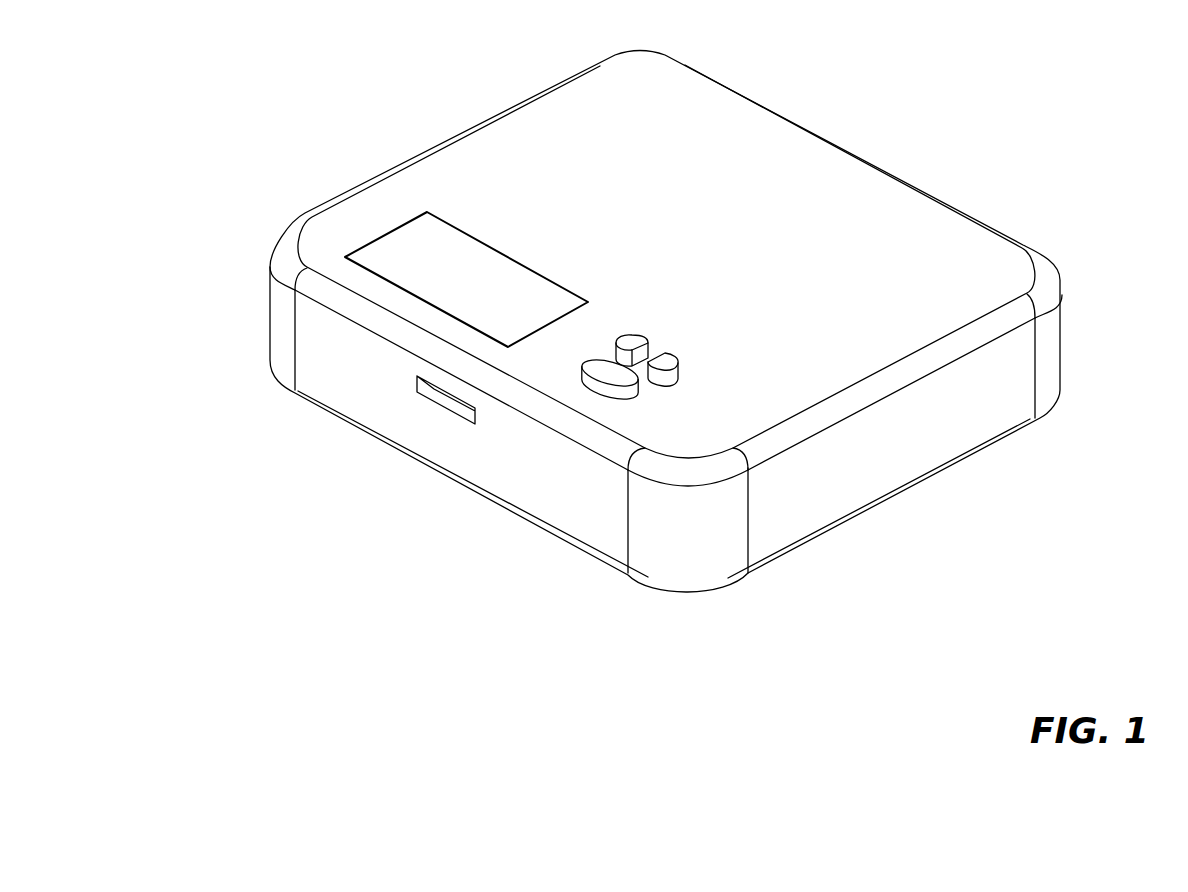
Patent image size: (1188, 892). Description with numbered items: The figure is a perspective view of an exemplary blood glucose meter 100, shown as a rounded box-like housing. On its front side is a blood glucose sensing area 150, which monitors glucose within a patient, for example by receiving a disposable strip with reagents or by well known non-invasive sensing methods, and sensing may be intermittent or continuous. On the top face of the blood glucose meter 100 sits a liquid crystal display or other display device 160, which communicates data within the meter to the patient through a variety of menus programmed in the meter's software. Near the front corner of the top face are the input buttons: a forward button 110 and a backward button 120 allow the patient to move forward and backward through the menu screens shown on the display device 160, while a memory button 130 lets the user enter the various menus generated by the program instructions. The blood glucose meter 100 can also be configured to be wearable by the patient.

The blood glucose meter 100 is at (280, 73).
The forward button 110 is at (658, 375).
The backward button 120 is at (638, 340).
The memory button 130 is at (603, 377).
The blood glucose sensing area 150 is at (440, 400).
The display device 160 is at (428, 295).